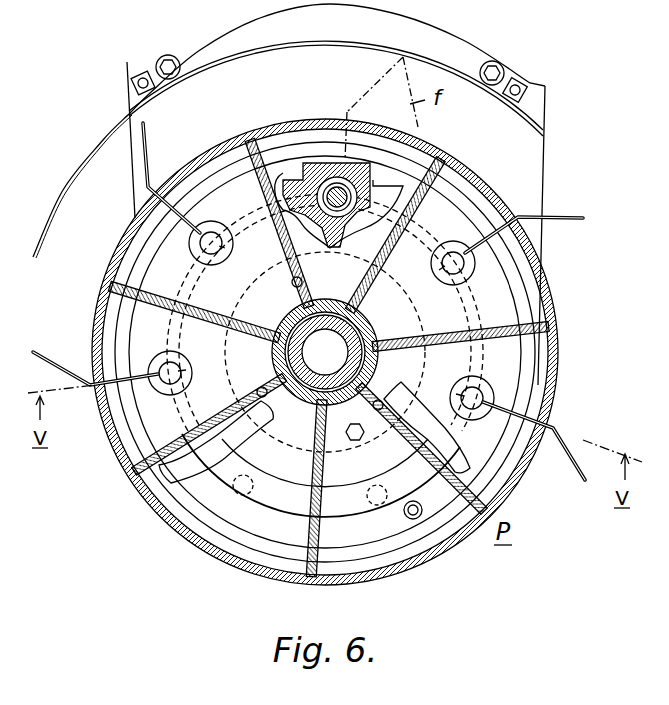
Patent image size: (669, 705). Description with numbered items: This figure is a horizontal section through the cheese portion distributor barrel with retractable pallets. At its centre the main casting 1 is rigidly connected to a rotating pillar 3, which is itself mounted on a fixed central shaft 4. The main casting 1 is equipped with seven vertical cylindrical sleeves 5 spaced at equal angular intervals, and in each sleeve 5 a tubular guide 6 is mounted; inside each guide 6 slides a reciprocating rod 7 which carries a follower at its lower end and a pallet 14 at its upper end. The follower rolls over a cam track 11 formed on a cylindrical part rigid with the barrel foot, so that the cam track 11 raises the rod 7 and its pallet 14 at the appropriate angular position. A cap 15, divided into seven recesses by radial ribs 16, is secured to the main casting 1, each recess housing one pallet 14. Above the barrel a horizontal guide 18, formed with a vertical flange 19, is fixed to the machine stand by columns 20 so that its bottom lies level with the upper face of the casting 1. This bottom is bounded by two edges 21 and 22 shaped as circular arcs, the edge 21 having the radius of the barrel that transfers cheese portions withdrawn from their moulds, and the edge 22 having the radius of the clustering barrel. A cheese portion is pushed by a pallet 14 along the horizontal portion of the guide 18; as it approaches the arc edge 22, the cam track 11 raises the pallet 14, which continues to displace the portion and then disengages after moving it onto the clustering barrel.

The main casting 1 is at (284, 318).
The rotating pillar 3 is at (306, 385).
The fixed central shaft 4 is at (322, 330).
The vertical cylindrical sleeve 5 is at (408, 220).
The tubular guide 6 is at (302, 197).
The reciprocating rod 7 is at (330, 213).
The cam track 11 is at (332, 505).
The pallet 14 is at (147, 150).
The cap 15 is at (560, 372).
The radial rib 16 is at (522, 317).
The horizontal guide 18 is at (237, 80).
The vertical flange 19 is at (80, 160).
The column 20 is at (168, 55).
The edge 21 is at (131, 162).
The edge 22 is at (543, 177).